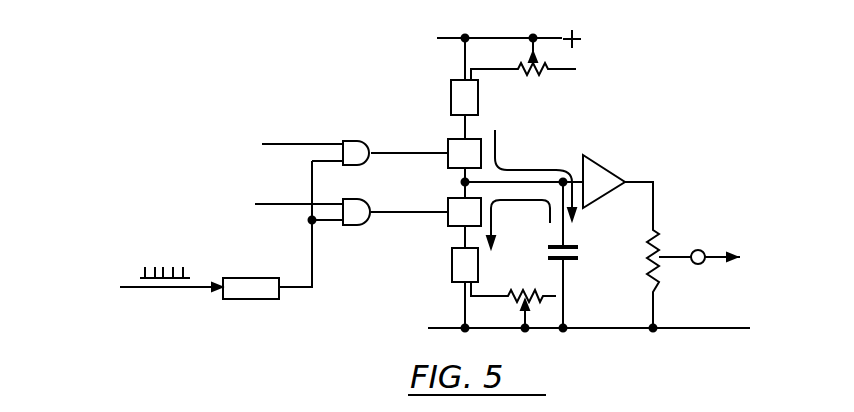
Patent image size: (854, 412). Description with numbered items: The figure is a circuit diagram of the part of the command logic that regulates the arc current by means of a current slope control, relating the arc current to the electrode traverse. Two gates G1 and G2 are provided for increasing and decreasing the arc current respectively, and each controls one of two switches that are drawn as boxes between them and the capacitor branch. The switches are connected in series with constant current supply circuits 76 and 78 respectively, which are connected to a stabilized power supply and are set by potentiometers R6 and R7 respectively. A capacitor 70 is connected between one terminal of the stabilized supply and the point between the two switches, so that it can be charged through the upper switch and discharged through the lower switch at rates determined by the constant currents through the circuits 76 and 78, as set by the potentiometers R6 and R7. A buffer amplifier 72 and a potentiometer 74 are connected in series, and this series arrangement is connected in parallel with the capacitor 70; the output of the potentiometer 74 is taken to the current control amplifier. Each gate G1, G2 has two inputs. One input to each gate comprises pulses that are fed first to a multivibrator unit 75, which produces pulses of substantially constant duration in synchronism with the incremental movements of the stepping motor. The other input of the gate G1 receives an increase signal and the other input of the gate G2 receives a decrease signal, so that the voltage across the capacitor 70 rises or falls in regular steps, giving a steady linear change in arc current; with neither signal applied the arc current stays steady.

The capacitor 70 is at (572, 262).
The buffer amplifier 72 is at (606, 183).
The potentiometer 74 is at (682, 255).
The multivibrator unit 75 is at (260, 292).
The constant current supply circuit 76 is at (458, 100).
The constant current supply circuit 78 is at (455, 266).
The potentiometer R6 is at (523, 68).
The potentiometer R7 is at (513, 295).
The gate G1 is at (355, 141).
The gate G2 is at (355, 200).